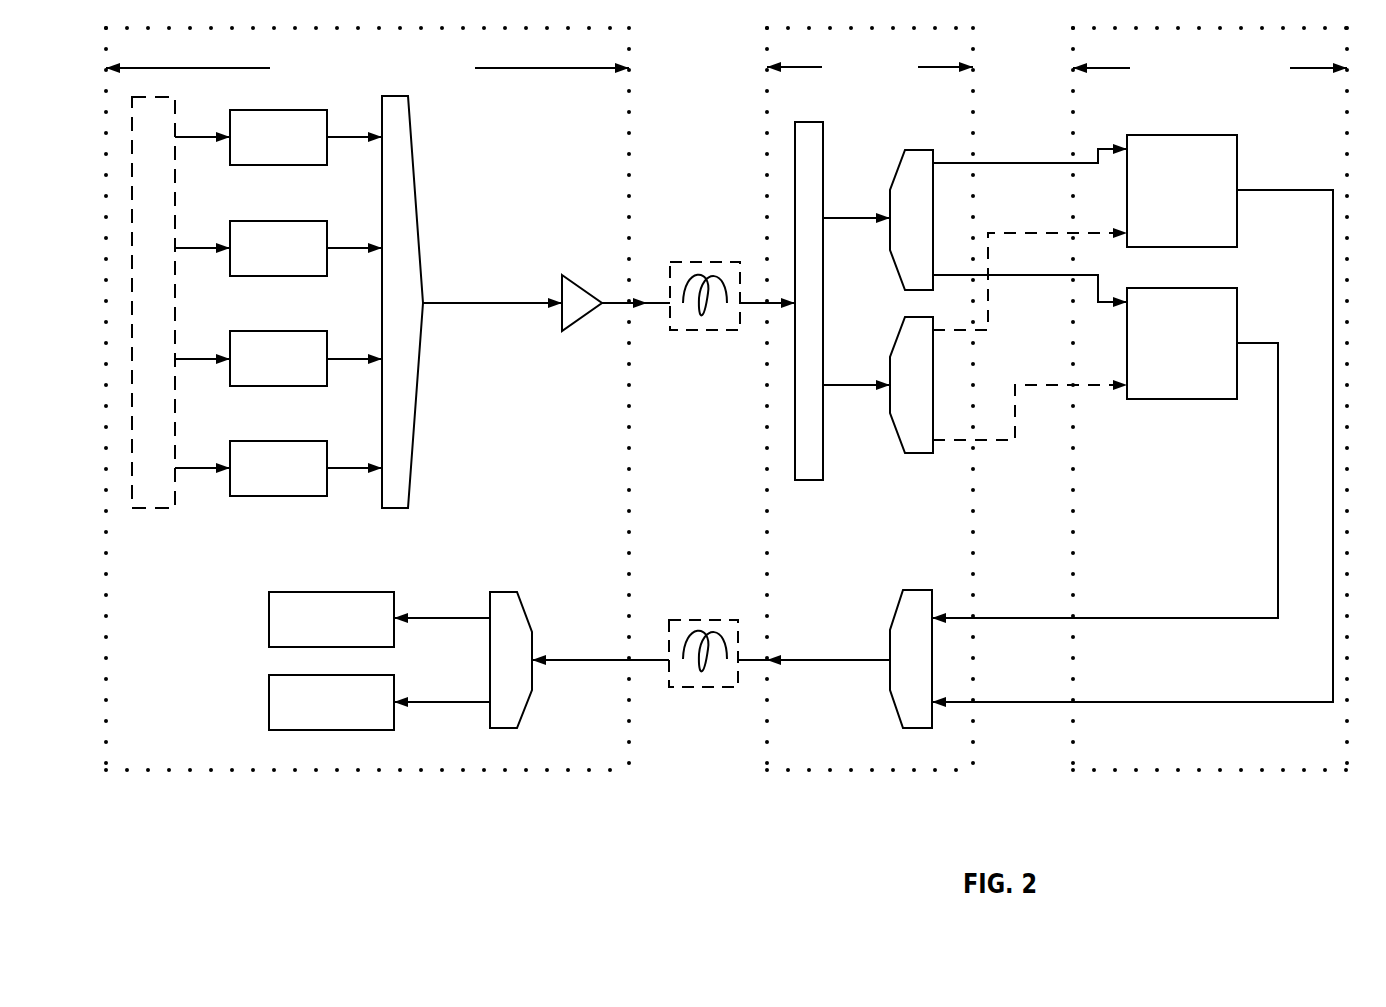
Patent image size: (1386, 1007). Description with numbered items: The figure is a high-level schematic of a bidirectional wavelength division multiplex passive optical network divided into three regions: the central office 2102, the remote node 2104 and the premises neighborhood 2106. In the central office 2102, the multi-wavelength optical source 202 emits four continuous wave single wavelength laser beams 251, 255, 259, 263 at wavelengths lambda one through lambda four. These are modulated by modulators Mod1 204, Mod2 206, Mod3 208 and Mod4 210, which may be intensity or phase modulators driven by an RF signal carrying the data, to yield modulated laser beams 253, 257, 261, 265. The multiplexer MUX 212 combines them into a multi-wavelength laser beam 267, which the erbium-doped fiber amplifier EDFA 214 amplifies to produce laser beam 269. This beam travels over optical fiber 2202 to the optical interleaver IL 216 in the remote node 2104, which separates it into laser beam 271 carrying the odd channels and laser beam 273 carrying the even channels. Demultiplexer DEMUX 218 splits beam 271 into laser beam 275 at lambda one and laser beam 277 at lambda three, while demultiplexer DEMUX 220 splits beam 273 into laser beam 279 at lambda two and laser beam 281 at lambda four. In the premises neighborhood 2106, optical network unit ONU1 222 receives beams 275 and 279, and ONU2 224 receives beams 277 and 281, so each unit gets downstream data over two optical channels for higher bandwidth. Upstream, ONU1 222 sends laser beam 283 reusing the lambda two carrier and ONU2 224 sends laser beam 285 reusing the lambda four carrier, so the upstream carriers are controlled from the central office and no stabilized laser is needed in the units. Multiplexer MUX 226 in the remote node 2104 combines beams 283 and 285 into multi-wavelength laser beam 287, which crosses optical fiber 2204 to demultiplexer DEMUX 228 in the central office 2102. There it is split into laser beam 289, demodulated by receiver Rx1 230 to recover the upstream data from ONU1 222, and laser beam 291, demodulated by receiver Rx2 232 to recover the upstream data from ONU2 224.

The central office 2102 is at (368, 387).
The remote node 2104 is at (871, 387).
The premises neighborhood 2106 is at (1211, 387).
The multi-wavelength optical source 202 is at (153, 320).
The modulator Mod1 204 is at (278, 152).
The modulator Mod2 206 is at (278, 263).
The modulator Mod3 208 is at (278, 373).
The modulator Mod4 210 is at (278, 483).
The multiplexer MUX 212 is at (425, 319).
The erbium-doped fiber amplifier EDFA 214 is at (569, 300).
The optical interleaver IL 216 is at (801, 317).
The demultiplexer DEMUX 218 is at (906, 207).
The demultiplexer DEMUX 220 is at (906, 401).
The optical network unit ONU1 222 is at (1206, 191).
The optical network unit ONU2 224 is at (1204, 342).
The multiplexer MUX 226 is at (914, 661).
The demultiplexer DEMUX 228 is at (521, 645).
The receiver Rx1 230 is at (308, 619).
The receiver Rx2 232 is at (308, 702).
The laser beam 251 is at (202, 140).
The modulated laser beam 253 is at (354, 140).
The laser beam 255 is at (202, 251).
The modulated laser beam 257 is at (354, 251).
The laser beam 259 is at (202, 362).
The modulated laser beam 261 is at (354, 362).
The laser beam 263 is at (202, 471).
The modulated laser beam 265 is at (354, 471).
The multi-wavelength laser beam 267 is at (492, 304).
The amplified multi-wavelength laser beam 269 is at (617, 305).
The laser beam 271 is at (856, 219).
The laser beam 273 is at (856, 385).
The laser beam 275 is at (1030, 150).
The laser beam 277 is at (1030, 290).
The laser beam 279 is at (1030, 269).
The laser beam 281 is at (1030, 399).
The laser beam 283 is at (1132, 432).
The laser beam 285 is at (1119, 481).
The multi-wavelength laser beam 287 is at (711, 662).
The laser beam 289 is at (442, 620).
The laser beam 291 is at (442, 703).
The optical fiber 2202 is at (705, 282).
The optical fiber 2204 is at (703, 639).